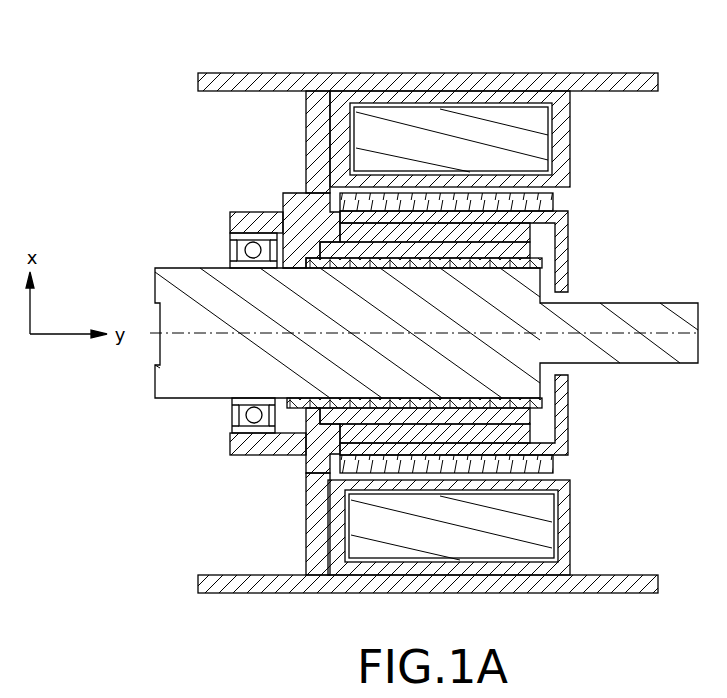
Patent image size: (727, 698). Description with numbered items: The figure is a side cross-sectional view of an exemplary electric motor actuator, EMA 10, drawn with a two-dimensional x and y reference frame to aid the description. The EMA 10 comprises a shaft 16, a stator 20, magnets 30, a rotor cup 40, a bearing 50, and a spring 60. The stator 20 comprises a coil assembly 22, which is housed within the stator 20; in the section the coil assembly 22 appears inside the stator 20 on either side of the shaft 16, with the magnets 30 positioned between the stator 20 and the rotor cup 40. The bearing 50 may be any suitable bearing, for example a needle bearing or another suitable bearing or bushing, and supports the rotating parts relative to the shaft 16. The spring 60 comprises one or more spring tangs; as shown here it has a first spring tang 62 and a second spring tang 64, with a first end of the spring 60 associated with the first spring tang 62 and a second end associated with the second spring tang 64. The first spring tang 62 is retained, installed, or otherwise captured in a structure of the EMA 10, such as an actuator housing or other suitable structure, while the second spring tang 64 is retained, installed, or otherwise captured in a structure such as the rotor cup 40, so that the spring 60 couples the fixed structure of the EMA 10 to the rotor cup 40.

The EMA 10 is at (250, 73).
The shaft 16 is at (165, 296).
The stator 20 is at (570, 133).
The coil assembly 22 is at (462, 118).
The magnets 30 is at (555, 204).
The rotor cup 40 is at (570, 246).
The bearing 50 is at (553, 446).
The spring 60 is at (330, 440).
The first spring tang 62 is at (298, 198).
The second spring tang 64 is at (570, 406).